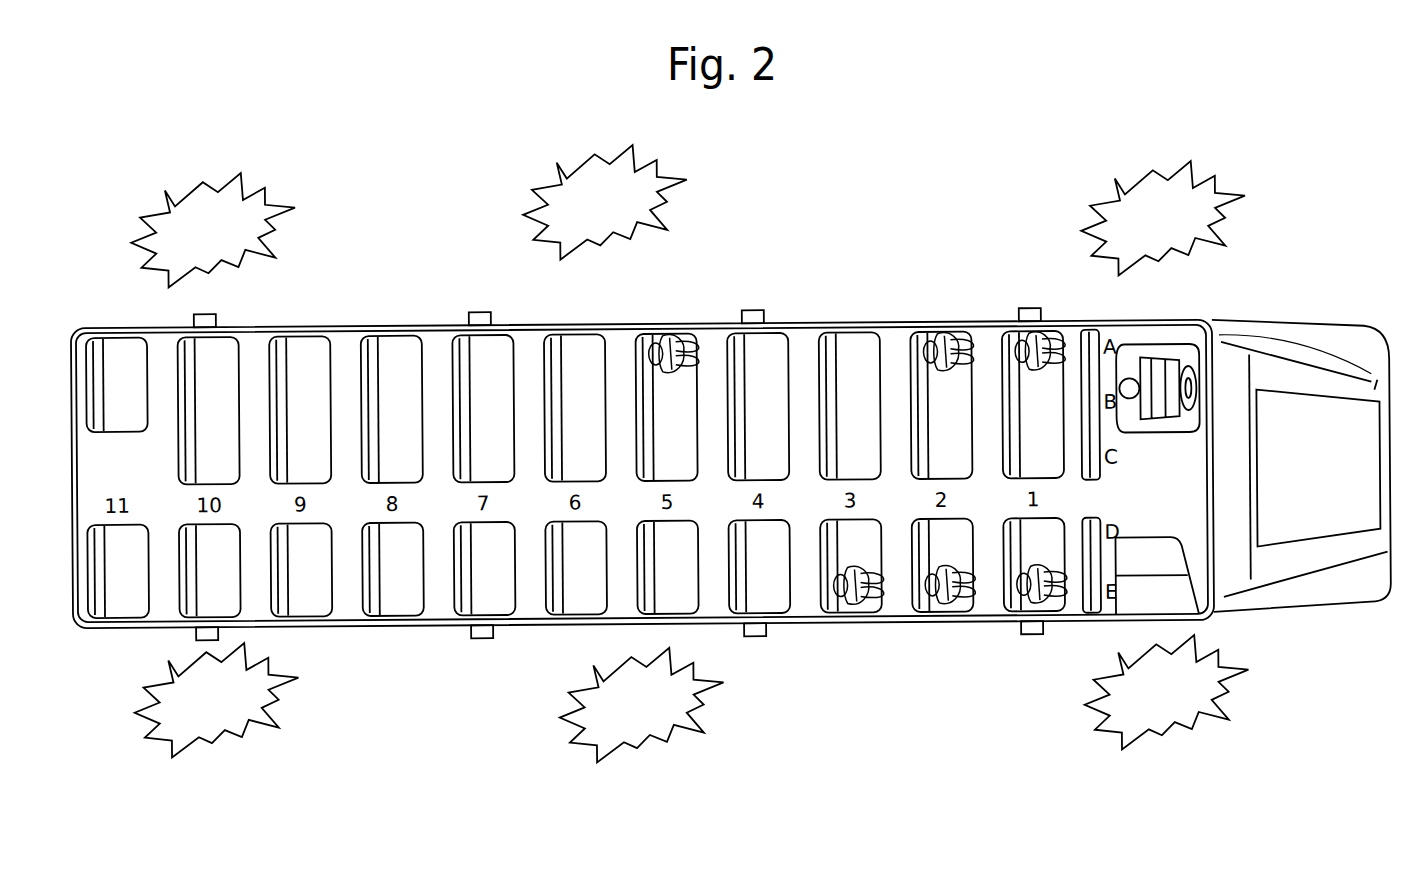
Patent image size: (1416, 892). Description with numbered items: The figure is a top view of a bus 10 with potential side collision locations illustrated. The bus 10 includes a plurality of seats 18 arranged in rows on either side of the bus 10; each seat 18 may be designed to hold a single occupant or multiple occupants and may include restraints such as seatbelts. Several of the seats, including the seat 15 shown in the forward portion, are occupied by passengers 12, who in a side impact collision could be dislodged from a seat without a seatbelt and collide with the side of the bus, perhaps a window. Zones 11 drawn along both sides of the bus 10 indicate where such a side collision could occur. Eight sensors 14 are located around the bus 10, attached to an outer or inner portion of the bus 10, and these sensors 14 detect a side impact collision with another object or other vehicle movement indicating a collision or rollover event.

The bus 10 is at (1323, 300).
The zones 11 is at (212, 214).
The passengers 12 is at (690, 342).
The sensors 14 is at (197, 326).
The seat 15 is at (862, 350).
The seats 18 is at (398, 602).